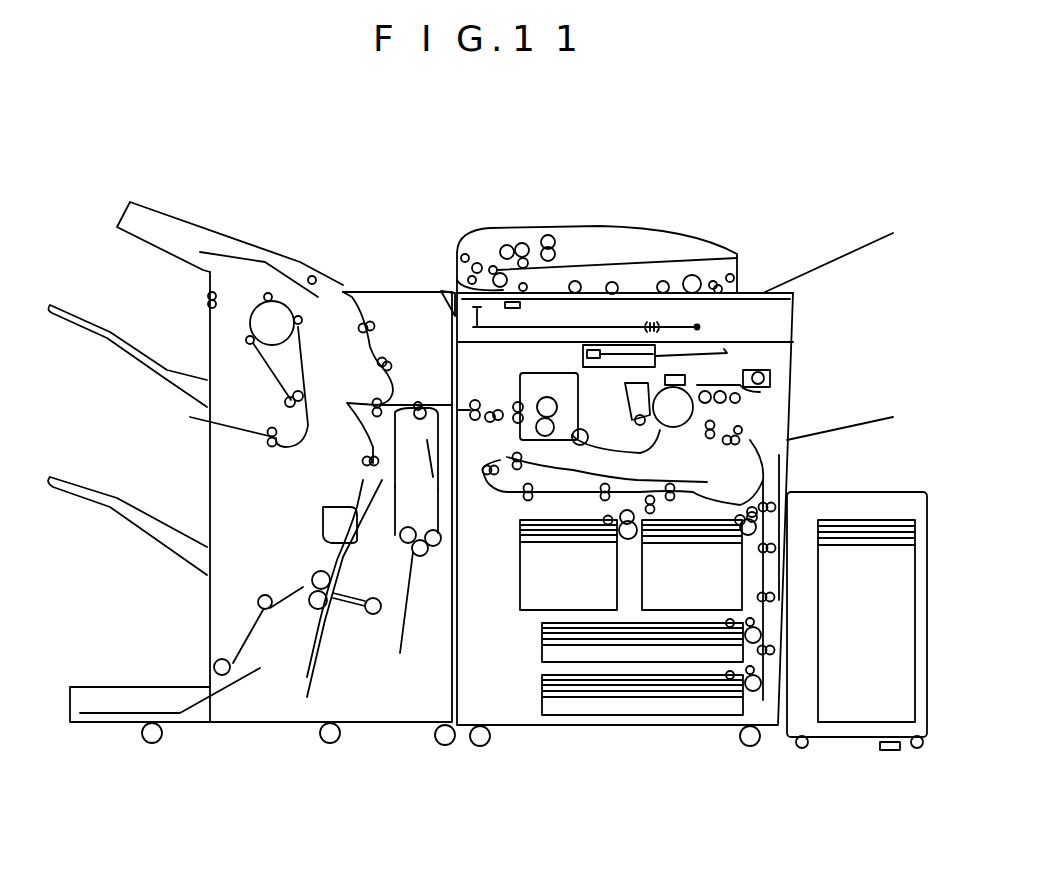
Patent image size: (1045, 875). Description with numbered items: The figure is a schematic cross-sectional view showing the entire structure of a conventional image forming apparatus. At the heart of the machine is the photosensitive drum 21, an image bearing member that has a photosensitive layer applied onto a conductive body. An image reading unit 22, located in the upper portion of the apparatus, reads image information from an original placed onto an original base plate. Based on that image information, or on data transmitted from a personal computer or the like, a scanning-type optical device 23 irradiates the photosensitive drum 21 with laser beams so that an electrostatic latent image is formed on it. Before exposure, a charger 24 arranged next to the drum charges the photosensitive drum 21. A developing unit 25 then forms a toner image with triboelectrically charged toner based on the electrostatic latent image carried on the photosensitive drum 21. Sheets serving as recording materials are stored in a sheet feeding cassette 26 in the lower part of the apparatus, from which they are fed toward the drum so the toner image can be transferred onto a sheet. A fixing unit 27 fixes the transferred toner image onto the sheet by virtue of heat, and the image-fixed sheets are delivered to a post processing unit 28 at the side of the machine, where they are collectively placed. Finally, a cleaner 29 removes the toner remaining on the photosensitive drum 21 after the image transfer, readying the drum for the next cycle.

The photosensitive drum 21 is at (693, 418).
The image reading unit 22 is at (640, 255).
The scanning-type optical device 23 is at (583, 347).
The charger 24 is at (665, 385).
The developing unit 25 is at (762, 387).
The sheet feeding cassette 26 is at (705, 572).
The fixing unit 27 is at (528, 385).
The post processing unit 28 is at (258, 525).
The cleaner 29 is at (630, 383).